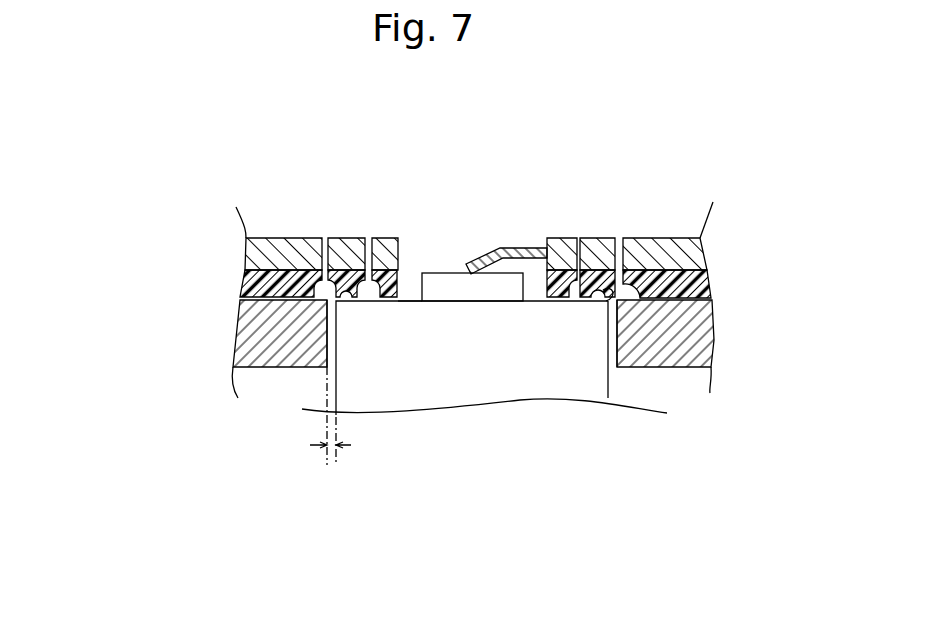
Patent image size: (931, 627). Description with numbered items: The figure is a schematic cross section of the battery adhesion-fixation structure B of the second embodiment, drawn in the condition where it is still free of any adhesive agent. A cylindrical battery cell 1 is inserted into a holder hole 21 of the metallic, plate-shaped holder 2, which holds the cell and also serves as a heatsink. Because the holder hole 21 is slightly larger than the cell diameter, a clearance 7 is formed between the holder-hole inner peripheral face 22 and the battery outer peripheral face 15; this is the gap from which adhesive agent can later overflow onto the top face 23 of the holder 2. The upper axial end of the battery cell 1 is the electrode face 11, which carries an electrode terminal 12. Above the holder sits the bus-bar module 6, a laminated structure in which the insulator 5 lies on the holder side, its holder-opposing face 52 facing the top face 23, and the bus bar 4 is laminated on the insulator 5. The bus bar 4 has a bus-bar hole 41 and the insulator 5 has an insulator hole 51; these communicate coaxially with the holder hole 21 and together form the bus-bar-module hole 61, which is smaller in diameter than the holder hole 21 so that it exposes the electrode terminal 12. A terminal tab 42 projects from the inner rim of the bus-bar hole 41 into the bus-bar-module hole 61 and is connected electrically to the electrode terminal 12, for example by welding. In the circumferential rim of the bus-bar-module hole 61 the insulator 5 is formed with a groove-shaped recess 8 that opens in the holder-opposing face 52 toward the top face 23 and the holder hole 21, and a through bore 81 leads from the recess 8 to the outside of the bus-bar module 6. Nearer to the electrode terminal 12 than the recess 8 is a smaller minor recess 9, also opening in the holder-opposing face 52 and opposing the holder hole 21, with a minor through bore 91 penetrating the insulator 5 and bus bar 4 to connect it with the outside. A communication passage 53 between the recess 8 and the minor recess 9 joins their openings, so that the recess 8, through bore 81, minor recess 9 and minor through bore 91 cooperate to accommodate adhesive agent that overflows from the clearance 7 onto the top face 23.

The battery adhesion-fixation structure B is at (100, 156).
The battery cell 1 is at (463, 390).
The electrode face 11 is at (410, 295).
The electrode terminal 12 is at (483, 301).
The battery outer peripheral face 15 is at (610, 383).
The holder 2 is at (262, 333).
The holder hole 21 is at (327, 338).
The holder-hole inner peripheral face 22 is at (614, 339).
The top face 23 is at (700, 278).
The bus bar 4 is at (433, 233).
The insulator 5 is at (479, 262).
The bus-bar module 6 is at (142, 207).
The clearance 7 is at (331, 455).
The recess 8 is at (287, 238).
The through bore 81 is at (325, 290).
The minor recess 9 is at (393, 238).
The minor through bore 91 is at (368, 290).
The bus-bar hole 41 is at (451, 265).
The terminal tab 42 is at (533, 246).
The insulator hole 51 is at (530, 288).
The holder-opposing face 52 is at (655, 302).
The communication passage 53 is at (602, 286).
The bus-bar-module hole 61 is at (520, 176).